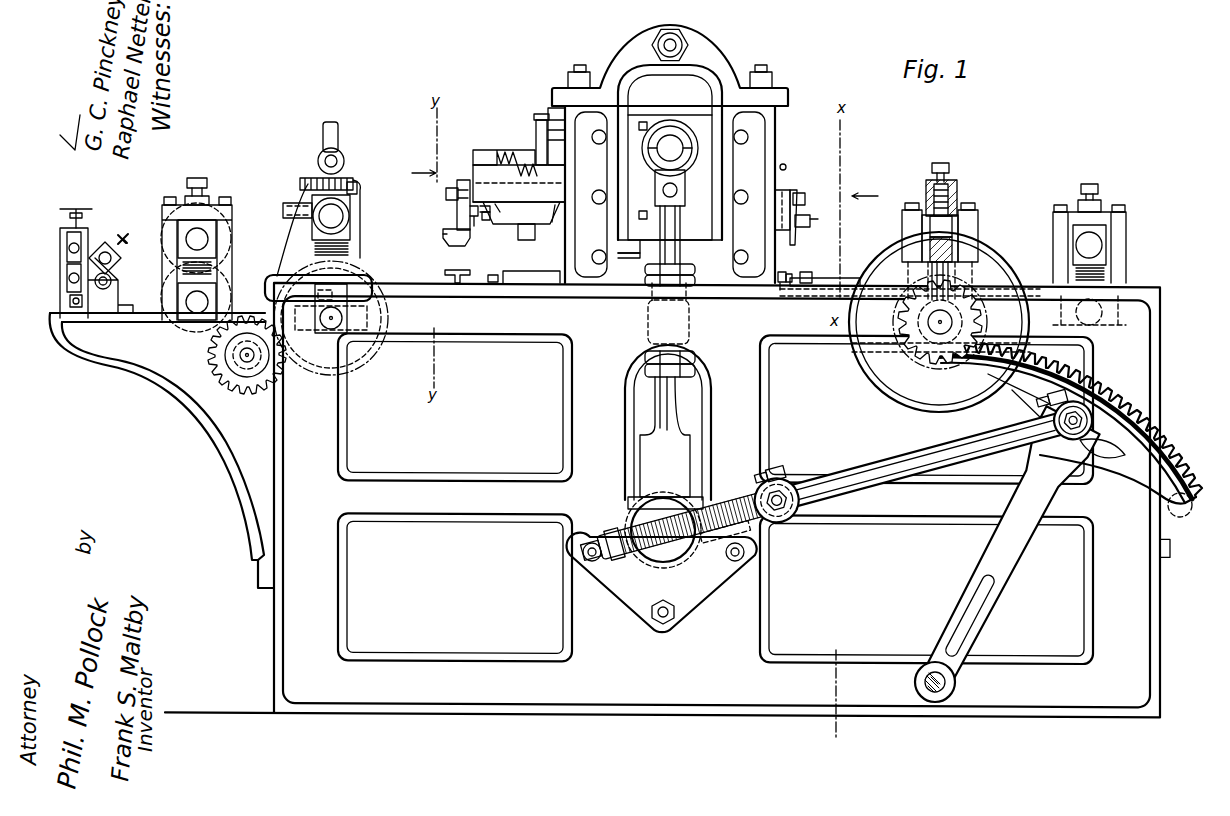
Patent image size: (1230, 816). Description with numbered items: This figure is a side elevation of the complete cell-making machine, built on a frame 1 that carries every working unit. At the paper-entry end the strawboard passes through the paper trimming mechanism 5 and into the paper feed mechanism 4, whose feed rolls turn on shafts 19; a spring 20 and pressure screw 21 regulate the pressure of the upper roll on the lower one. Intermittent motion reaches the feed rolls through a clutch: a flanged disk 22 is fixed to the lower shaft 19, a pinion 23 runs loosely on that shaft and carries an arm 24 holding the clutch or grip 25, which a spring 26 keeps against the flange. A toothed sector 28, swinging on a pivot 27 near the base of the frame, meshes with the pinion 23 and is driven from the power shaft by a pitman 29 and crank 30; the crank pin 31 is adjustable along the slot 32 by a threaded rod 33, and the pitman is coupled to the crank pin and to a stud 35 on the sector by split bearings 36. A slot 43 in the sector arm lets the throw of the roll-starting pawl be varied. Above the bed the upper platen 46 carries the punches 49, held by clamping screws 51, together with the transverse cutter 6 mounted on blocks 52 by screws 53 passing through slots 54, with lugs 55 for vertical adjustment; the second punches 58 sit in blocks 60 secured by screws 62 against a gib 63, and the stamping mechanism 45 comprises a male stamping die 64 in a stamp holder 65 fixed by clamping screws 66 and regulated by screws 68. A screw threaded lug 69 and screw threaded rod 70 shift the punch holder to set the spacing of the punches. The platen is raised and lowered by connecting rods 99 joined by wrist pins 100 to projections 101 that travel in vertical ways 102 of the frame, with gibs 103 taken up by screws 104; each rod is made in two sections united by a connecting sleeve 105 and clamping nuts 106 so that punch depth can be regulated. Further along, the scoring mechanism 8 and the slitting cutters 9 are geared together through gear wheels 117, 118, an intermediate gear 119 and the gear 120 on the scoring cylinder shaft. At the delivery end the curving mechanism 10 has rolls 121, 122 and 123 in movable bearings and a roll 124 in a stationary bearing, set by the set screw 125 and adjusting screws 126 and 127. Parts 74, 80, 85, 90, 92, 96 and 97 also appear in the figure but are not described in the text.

The frame 1 is at (610, 499).
The paper feed mechanism 4 is at (957, 250).
The paper trimming mechanism 5 is at (1102, 254).
The transverse cutter 6 is at (789, 218).
The scoring mechanism 8 is at (318, 211).
The slitting cutters 9 is at (202, 255).
The curving mechanism 10 is at (96, 273).
The shaft 19 is at (930, 330).
The spring 20 is at (958, 198).
The pressure screw 21 is at (950, 172).
The flanged disk 22 is at (1010, 262).
The pinion 23 is at (985, 316).
The arm 24 is at (960, 270).
The clutch or grip 25 is at (947, 247).
The spring 26 is at (925, 258).
The pivot 27 is at (946, 682).
The toothed sector 28 is at (1133, 458).
The pitman 29 is at (908, 460).
The crank 30 is at (740, 490).
The crank pin 31 is at (790, 492).
The slot 32 is at (730, 520).
The threaded rod 33 is at (662, 562).
The stud 35 is at (1092, 418).
The split bearings 36 is at (780, 478).
The slot 43 is at (968, 618).
The stamping mechanism 45 is at (448, 205).
The upper platen 46 is at (557, 136).
The punches 49 is at (796, 266).
The clamping screws 51 is at (786, 166).
The blocks 52 is at (797, 190).
The screws 53 is at (806, 220).
The slots 54 is at (805, 177).
The lugs 55 is at (805, 198).
The punches 58 is at (540, 228).
The blocks 60 is at (524, 240).
The screws 62 is at (490, 218).
The gib 63 is at (500, 232).
The male stamping die 64 is at (455, 246).
The stamp holder 65 is at (436, 236).
The clamping screws 66 is at (445, 193).
The screws 68 is at (476, 226).
The screw threaded lug 69 is at (540, 135).
The screw threaded rod 70 is at (510, 156).
The rod 74 is at (785, 290).
The bar 80 is at (835, 272).
The block 85 is at (810, 272).
The stud 90 is at (780, 267).
The block 92 is at (540, 280).
The pin 96 is at (486, 271).
The bracket 97 is at (444, 273).
The connecting rods 99 is at (668, 427).
The wrist pins 100 is at (670, 148).
The projections 101 is at (700, 118).
The vertical ways 102 is at (669, 257).
The gibs 103 is at (633, 112).
The screws 104 is at (650, 126).
The connecting nut or sleeve 105 is at (690, 322).
The clamping nuts 106 is at (645, 270).
The gear wheel 117 is at (224, 247).
The gear wheel 118 is at (232, 320).
The intermediate gear 119 is at (250, 362).
The gear 120 is at (300, 376).
The roll 121 is at (66, 283).
The roll 122 is at (66, 250).
The roll 123 is at (118, 262).
The roll 124 is at (112, 283).
The set screw 125 is at (78, 308).
The adjusting screw 126 is at (88, 212).
The adjusting screw 127 is at (130, 232).